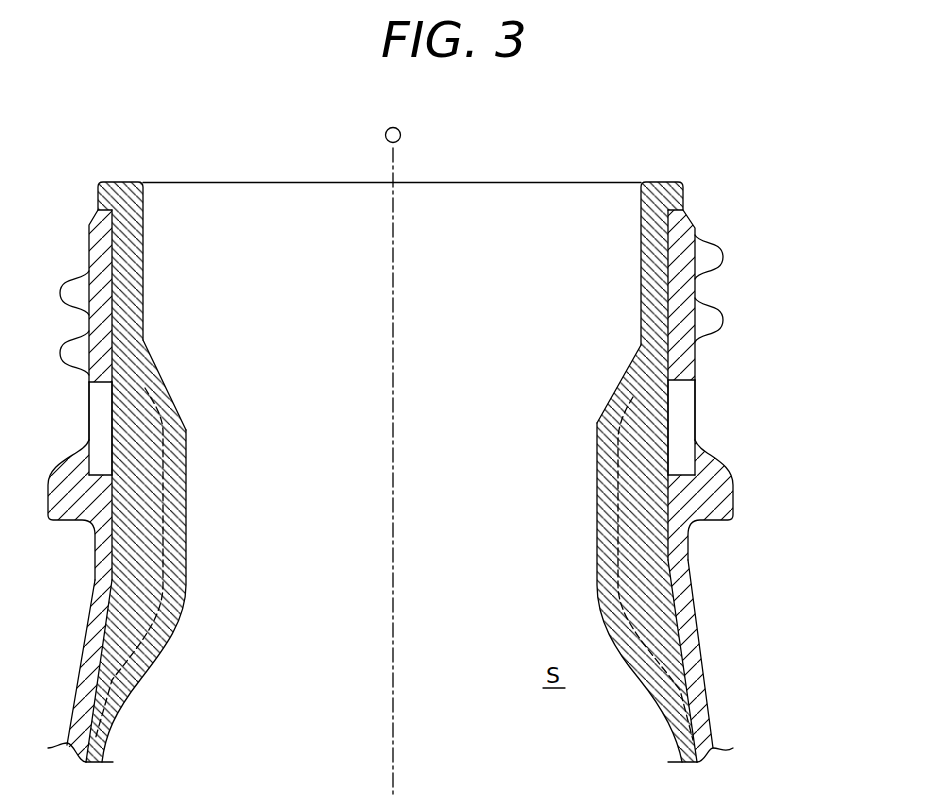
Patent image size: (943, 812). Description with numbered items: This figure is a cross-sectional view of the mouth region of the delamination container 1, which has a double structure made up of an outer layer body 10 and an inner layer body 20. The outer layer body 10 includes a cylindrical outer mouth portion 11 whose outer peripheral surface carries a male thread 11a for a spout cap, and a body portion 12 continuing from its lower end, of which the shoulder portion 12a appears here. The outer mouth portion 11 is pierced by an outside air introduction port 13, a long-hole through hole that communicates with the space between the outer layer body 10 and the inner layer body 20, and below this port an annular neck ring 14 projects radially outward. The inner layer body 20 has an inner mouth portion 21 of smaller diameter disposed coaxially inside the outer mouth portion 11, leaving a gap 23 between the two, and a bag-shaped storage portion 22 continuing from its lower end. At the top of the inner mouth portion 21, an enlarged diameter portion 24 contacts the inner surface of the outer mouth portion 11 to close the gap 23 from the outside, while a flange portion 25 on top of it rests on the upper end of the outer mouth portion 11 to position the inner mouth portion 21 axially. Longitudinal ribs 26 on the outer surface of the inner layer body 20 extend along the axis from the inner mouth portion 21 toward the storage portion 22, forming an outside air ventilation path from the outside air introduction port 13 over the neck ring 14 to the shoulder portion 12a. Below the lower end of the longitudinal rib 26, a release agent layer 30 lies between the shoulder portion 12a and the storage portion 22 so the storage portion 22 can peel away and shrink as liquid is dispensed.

The delamination container 1 is at (782, 188).
The outer layer body 10 is at (697, 402).
The outer mouth portion 11 is at (697, 287).
The male thread 11a is at (722, 257).
The body portion 12 is at (712, 713).
The shoulder portion 12a is at (697, 690).
The outside air introduction port 13 is at (682, 427).
The neck ring 14 is at (728, 505).
The inner layer body 20 is at (595, 567).
The inner mouth portion 21 is at (595, 440).
The storage portion 22 is at (683, 750).
The gap 23 is at (633, 540).
The enlarged diameter portion 24 is at (650, 253).
The flange portion 25 is at (666, 187).
The longitudinal rib 26 is at (635, 485).
The release agent layer 30 is at (718, 748).